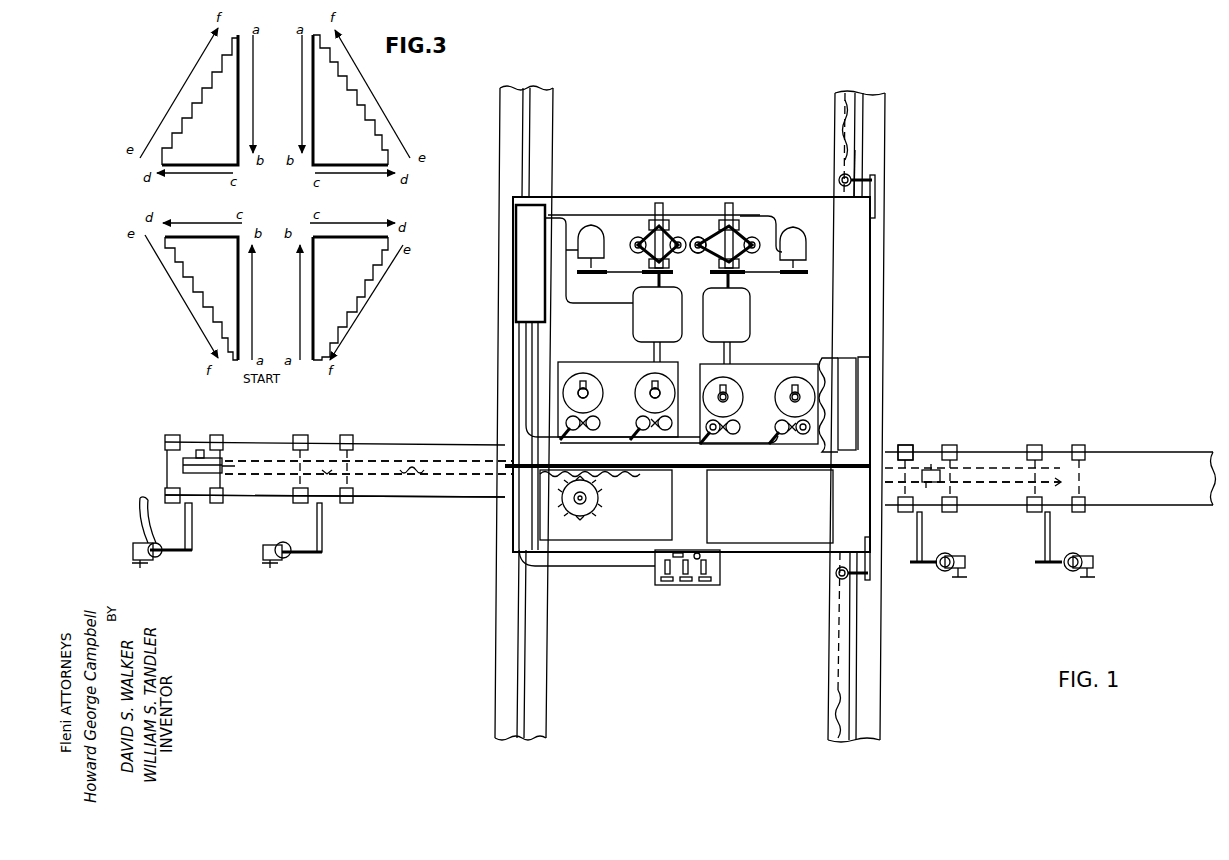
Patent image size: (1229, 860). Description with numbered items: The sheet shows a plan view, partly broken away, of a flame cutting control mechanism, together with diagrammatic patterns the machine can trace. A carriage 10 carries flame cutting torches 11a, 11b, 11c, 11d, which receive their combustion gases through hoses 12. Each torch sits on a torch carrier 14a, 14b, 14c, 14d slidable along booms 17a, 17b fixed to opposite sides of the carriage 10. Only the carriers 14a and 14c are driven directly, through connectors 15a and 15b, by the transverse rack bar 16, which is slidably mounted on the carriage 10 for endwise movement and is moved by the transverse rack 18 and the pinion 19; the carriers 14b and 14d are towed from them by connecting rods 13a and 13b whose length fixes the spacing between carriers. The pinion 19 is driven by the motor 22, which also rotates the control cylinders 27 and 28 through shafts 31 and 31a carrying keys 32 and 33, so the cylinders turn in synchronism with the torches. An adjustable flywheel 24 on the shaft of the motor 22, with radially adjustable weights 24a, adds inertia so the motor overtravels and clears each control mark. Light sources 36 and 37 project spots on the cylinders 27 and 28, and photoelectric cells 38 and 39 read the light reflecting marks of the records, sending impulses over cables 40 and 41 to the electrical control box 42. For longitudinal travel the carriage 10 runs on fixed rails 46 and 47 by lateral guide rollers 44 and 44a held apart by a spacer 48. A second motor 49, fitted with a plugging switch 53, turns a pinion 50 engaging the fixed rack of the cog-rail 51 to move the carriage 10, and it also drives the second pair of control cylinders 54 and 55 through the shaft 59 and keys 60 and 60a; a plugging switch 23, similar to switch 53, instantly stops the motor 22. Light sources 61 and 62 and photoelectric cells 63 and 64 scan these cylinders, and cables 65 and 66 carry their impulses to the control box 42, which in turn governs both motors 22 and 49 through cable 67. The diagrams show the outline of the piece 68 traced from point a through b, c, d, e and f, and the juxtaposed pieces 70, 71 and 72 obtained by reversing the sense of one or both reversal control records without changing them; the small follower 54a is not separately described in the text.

In FIG. 1, the carriage 10 is at (843, 338).
In FIG. 1, the flame cutting torch 11a is at (160, 560).
In FIG. 1, the flame cutting torch 11b is at (290, 560).
In FIG. 1, the flame cutting torch 11c is at (945, 572).
In FIG. 1, the flame cutting torch 11d is at (1072, 572).
In FIG. 1, the hoses 12 is at (143, 512).
In FIG. 1, the connecting rod 13a is at (262, 474).
In FIG. 1, the connecting rod 13b is at (995, 488).
In FIG. 1, the torch carrier 14a is at (216, 435).
In FIG. 1, the torch carrier 14b is at (345, 435).
In FIG. 1, the torch carrier 14c is at (908, 445).
In FIG. 1, the torch carrier 14d is at (1080, 448).
In FIG. 1, the connector 15a is at (185, 468).
In FIG. 1, the connector 15b is at (940, 475).
In FIG. 1, the transverse rack bar 16 is at (390, 462).
In FIG. 1, the boom 17a is at (400, 487).
In FIG. 1, the boom 17b is at (1150, 502).
In FIG. 1, the transverse rack 18 is at (450, 472).
In FIG. 1, the pinion 19 is at (600, 505).
In FIG. 1, the motor 22 is at (640, 322).
In FIG. 1, the plugging switch 23 is at (604, 250).
In FIG. 1, the adjustable flywheel 24 is at (637, 238).
In FIG. 1, the weights 24a is at (694, 240).
In FIG. 1, the control cylinder 27 is at (568, 390).
In FIG. 1, the control cylinder 28 is at (665, 405).
In FIG. 1, the shaft 31 is at (590, 393).
In FIG. 1, the shaft 31a is at (662, 395).
In FIG. 1, the key 32 is at (583, 383).
In FIG. 1, the key 33 is at (658, 383).
In FIG. 1, the light source 36 is at (600, 423).
In FIG. 1, the light source 37 is at (672, 423).
In FIG. 1, the photoelectric cell 38 is at (575, 432).
In FIG. 1, the photoelectric cell 39 is at (648, 432).
In FIG. 1, the cable 40 is at (563, 440).
In FIG. 1, the cable 41 is at (633, 440).
In FIG. 1, the electrical control box 42 is at (525, 283).
In FIG. 1, the lateral guide roller 44 is at (876, 182).
In FIG. 1, the lateral guide roller 44a is at (845, 180).
In FIG. 1, the fixed rail 46 is at (862, 165).
In FIG. 1, the fixed rail 47 is at (530, 152).
In FIG. 1, the spacer 48 is at (874, 172).
In FIG. 1, the second motor 49 is at (740, 325).
In FIG. 1, the pinion 50 is at (850, 432).
In FIG. 1, the cog-rail 51 is at (845, 405).
In FIG. 1, the plugging switch 53 is at (806, 250).
In FIG. 1, the control cylinder 54 is at (735, 395).
In FIG. 1, the cam follower 54a is at (800, 406).
In FIG. 1, the control cylinder 55 is at (787, 385).
In FIG. 1, the shaft 59 is at (724, 406).
In FIG. 1, the key 60 is at (723, 385).
In FIG. 1, the key 60a is at (795, 385).
In FIG. 1, the light source 61 is at (735, 430).
In FIG. 1, the light source 62 is at (797, 434).
In FIG. 1, the photoelectric cell 63 is at (714, 437).
In FIG. 1, the photoelectric cell 64 is at (800, 435).
In FIG. 1, the cable 65 is at (703, 442).
In FIG. 1, the cable 66 is at (775, 445).
In FIG. 1, the cable 67 is at (548, 218).
In FIG. 3, the piece 68 is at (205, 298).
In FIG. 3, the piece 70 is at (208, 98).
In FIG. 3, the piece 71 is at (352, 118).
In FIG. 3, the piece 72 is at (330, 305).